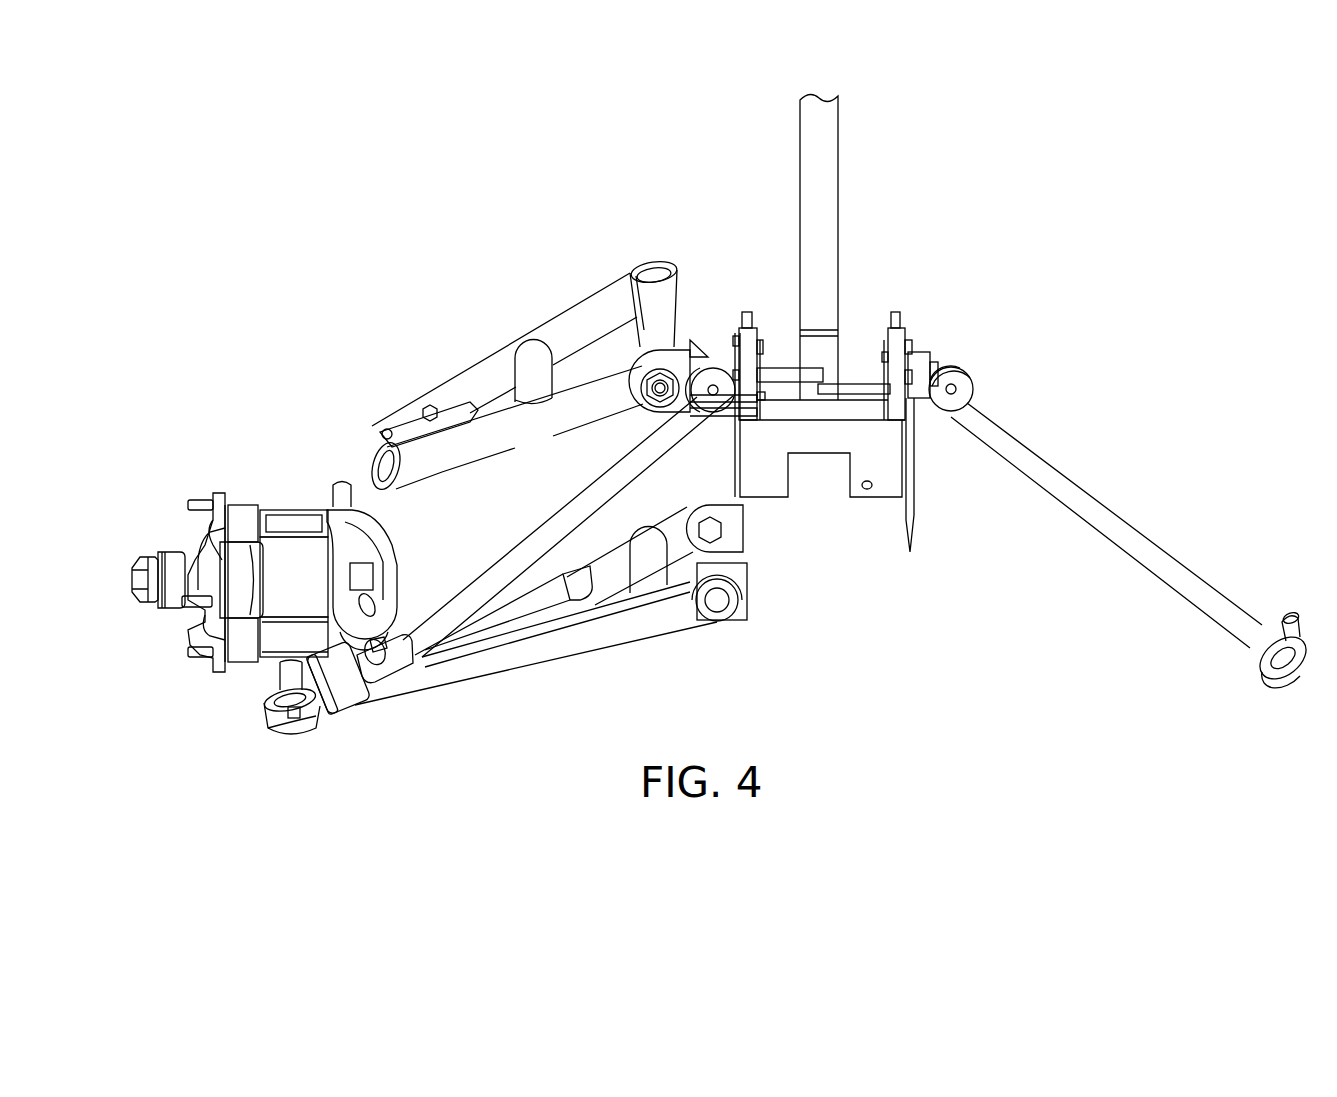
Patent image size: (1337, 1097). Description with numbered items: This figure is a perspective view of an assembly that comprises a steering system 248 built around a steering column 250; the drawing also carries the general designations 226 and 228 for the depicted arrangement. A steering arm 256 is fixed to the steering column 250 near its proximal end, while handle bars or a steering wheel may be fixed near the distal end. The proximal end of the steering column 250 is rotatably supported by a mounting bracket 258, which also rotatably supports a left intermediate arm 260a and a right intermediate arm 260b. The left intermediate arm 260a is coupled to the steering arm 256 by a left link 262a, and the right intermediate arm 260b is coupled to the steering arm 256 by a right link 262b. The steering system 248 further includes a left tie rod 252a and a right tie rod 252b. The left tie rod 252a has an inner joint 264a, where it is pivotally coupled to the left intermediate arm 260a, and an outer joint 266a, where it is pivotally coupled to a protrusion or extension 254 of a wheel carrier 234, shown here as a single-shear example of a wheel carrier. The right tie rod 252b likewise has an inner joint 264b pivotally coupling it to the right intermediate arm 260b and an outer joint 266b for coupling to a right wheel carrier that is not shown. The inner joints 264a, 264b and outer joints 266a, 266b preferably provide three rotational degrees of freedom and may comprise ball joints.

The steering assembly 226 is at (1030, 596).
The suspension assembly 228 is at (452, 205).
The wheel carrier 234 is at (287, 520).
The steering system 248 is at (968, 550).
The steering column 250 is at (825, 202).
The left tie rod 252a is at (525, 501).
The right tie rod 252b is at (1167, 518).
The protrusion or extension 254 is at (390, 655).
The steering arm 256 is at (822, 383).
The mounting bracket 258 is at (762, 490).
The left intermediate arm 260a is at (683, 337).
The right intermediate arm 260b is at (948, 362).
The left link 262a is at (790, 365).
The right link 262b is at (853, 392).
The inner joint 264a is at (690, 402).
The inner joint 264b is at (942, 425).
The outer joint 266a is at (378, 668).
The outer joint 266b is at (1272, 653).